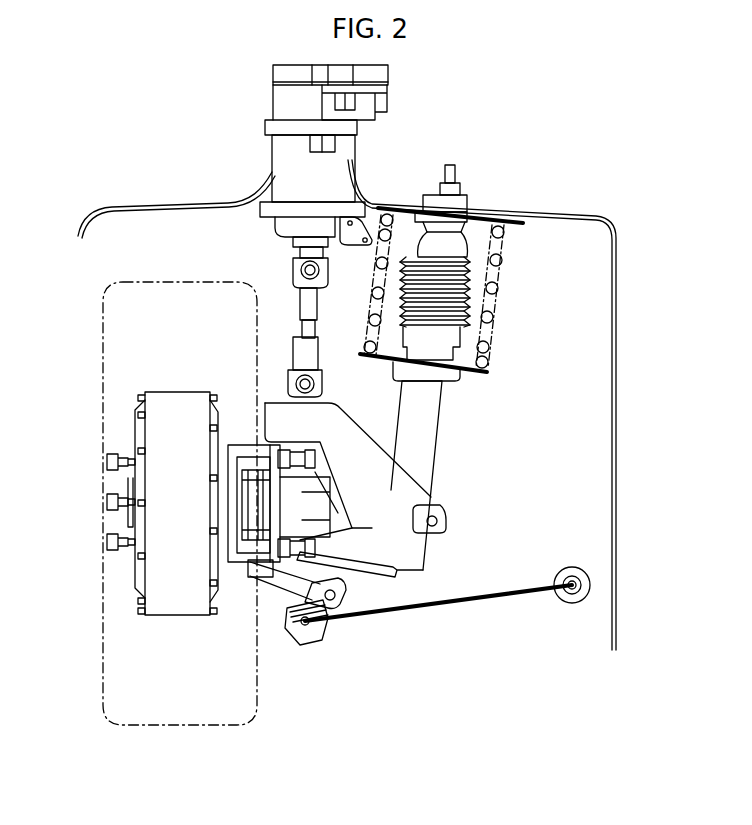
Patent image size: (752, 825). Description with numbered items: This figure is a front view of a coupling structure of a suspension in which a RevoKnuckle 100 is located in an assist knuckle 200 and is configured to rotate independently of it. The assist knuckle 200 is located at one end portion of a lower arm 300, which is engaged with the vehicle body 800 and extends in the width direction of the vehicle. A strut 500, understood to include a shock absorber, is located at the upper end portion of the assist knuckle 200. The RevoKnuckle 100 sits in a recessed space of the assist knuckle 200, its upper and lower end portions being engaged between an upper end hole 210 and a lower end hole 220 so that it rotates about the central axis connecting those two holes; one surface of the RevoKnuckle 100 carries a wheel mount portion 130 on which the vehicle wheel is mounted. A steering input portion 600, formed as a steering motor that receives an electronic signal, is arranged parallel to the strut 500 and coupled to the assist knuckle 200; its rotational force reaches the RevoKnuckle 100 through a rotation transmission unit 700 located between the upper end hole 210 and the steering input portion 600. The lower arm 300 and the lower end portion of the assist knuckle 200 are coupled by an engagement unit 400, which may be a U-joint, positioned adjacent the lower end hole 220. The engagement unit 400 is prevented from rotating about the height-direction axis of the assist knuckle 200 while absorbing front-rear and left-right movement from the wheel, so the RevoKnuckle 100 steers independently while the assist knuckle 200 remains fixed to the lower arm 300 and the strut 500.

The RevoKnuckle 100 is at (347, 537).
The wheel mount portion 130 is at (238, 553).
The assist knuckle 200 is at (342, 467).
The upper end hole 210 is at (317, 423).
The lower end hole 220 is at (262, 577).
The lower arm 300 is at (453, 607).
The engagement unit 400 is at (323, 625).
The strut 500 is at (453, 248).
The steering input portion 600 is at (282, 165).
The rotation transmission unit 700 is at (305, 302).
The vehicle body 800 is at (618, 418).